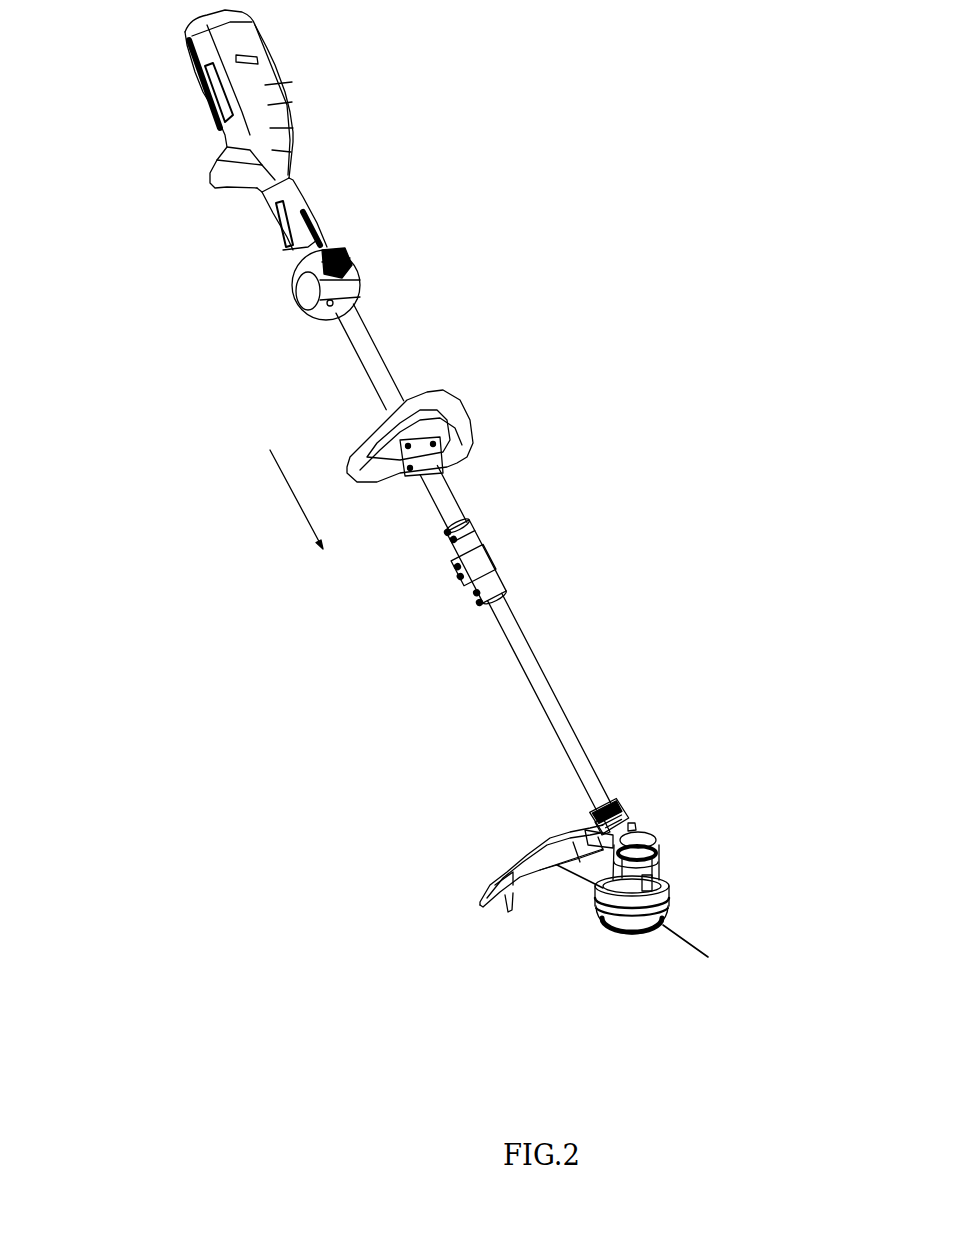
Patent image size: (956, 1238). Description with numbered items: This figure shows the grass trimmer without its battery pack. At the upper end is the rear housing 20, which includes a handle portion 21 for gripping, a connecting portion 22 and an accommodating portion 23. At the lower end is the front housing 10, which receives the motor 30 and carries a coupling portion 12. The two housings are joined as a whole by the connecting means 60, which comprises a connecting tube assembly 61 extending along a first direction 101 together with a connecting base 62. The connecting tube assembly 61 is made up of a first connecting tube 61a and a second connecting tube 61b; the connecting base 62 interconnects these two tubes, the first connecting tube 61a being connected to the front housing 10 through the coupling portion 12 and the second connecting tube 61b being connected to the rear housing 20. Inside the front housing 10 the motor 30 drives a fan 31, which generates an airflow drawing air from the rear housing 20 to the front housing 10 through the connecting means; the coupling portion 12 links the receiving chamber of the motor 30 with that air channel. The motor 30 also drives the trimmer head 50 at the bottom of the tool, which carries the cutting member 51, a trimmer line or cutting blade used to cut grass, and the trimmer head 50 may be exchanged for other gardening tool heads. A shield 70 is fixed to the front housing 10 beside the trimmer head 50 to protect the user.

The rear housing 20 is at (183, 310).
The connecting portion 22 is at (205, 123).
The handle portion 21 is at (270, 227).
The accommodating portion 23 is at (307, 297).
The connecting means 60 is at (640, 366).
The connecting tube assembly 61 is at (557, 433).
The second connecting tube 61b is at (452, 490).
The first connecting tube 61a is at (535, 652).
The connecting base 62 is at (419, 607).
The first direction 101 is at (285, 485).
The coupling portion 12 is at (622, 822).
The front housing 10 is at (646, 831).
The fan 31 is at (657, 845).
The motor 30 is at (650, 873).
The trimmer head 50 is at (654, 939).
The cutting member 51 is at (708, 943).
The shield 70 is at (491, 871).